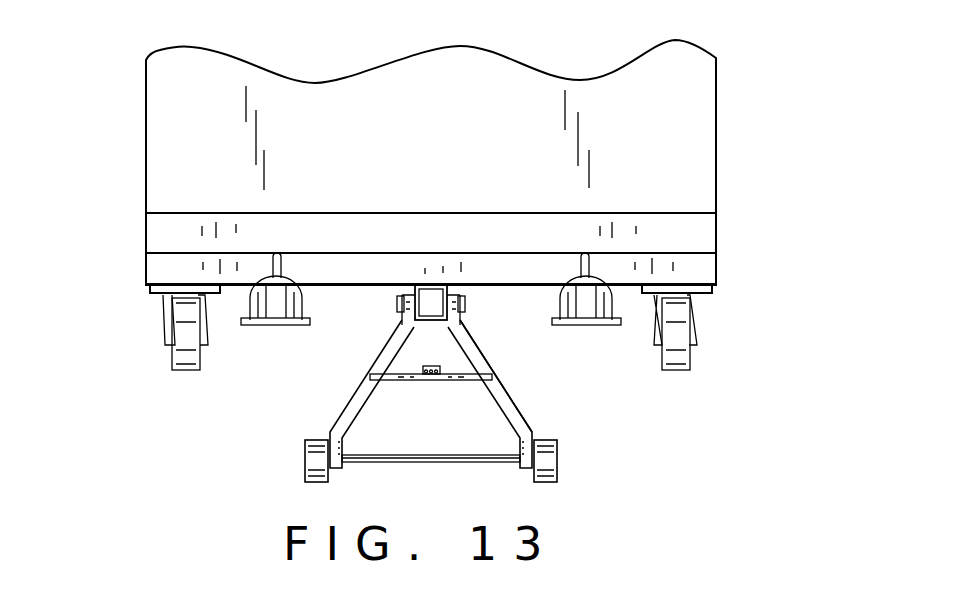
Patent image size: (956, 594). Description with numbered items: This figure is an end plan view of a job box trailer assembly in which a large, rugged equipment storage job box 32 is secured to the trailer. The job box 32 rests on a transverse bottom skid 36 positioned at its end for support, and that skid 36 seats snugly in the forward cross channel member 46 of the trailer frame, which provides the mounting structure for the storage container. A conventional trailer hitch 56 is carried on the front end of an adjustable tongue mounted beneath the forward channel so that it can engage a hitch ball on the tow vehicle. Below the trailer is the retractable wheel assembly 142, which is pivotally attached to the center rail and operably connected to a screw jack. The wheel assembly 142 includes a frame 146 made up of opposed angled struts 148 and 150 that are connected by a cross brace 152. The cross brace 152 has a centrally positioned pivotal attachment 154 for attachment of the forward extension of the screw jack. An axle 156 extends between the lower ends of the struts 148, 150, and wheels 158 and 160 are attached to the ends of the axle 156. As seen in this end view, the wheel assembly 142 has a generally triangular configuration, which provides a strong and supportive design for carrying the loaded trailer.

The job box 32 is at (692, 126).
The transverse bottom skid 36 is at (695, 236).
The forward cross channel member 46 is at (695, 270).
The trailer hitch 56 is at (265, 295).
The retractable wheel assembly 142 is at (438, 397).
The frame 146 is at (528, 430).
The angled strut 148 is at (502, 390).
The angled strut 150 is at (345, 410).
The cross brace 152 is at (420, 383).
The pivotal attachment 154 is at (428, 366).
The axle 156 is at (437, 462).
The wheel 158 is at (558, 470).
The wheel 160 is at (318, 470).